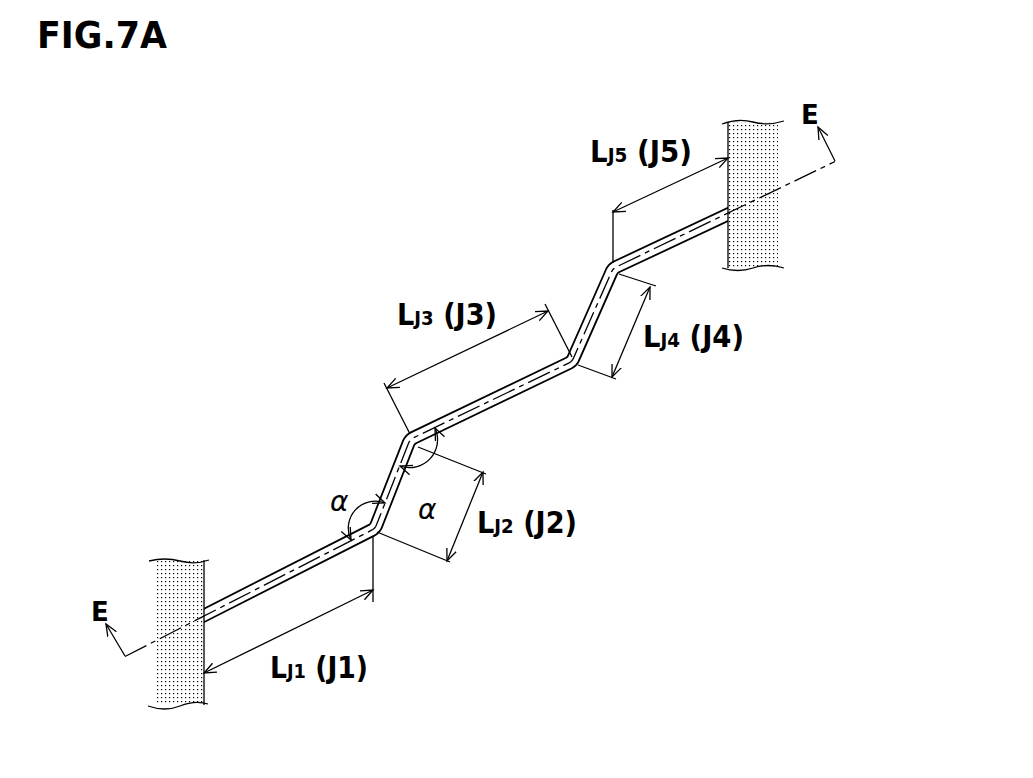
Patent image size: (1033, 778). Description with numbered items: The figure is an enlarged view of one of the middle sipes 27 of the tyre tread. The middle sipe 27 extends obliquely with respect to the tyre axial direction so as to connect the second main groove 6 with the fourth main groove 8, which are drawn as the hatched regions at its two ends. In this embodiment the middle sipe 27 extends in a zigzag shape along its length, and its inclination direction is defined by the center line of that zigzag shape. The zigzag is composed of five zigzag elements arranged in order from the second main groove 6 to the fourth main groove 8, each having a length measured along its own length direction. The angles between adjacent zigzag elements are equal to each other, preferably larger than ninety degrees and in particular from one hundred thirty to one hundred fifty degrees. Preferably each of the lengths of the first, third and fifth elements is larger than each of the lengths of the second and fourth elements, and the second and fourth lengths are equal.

The second main groove 6 is at (151, 544).
The fourth main groove 8 is at (785, 90).
The middle sipe 27 is at (337, 417).